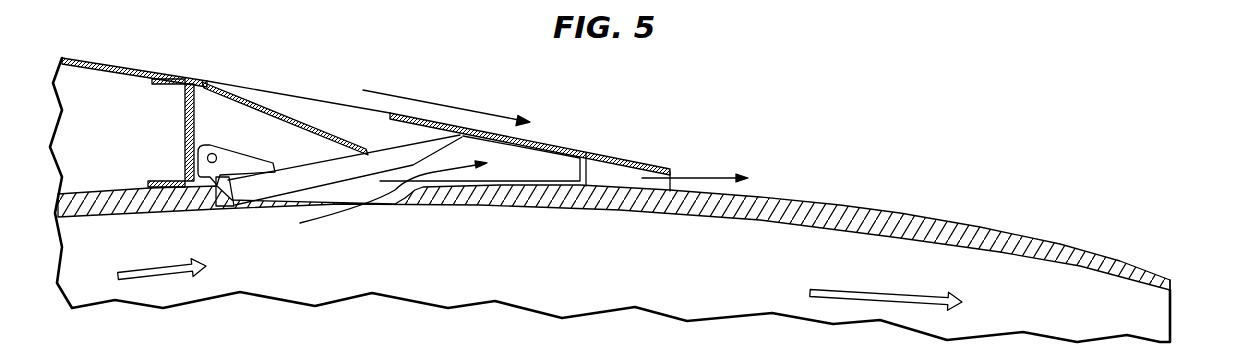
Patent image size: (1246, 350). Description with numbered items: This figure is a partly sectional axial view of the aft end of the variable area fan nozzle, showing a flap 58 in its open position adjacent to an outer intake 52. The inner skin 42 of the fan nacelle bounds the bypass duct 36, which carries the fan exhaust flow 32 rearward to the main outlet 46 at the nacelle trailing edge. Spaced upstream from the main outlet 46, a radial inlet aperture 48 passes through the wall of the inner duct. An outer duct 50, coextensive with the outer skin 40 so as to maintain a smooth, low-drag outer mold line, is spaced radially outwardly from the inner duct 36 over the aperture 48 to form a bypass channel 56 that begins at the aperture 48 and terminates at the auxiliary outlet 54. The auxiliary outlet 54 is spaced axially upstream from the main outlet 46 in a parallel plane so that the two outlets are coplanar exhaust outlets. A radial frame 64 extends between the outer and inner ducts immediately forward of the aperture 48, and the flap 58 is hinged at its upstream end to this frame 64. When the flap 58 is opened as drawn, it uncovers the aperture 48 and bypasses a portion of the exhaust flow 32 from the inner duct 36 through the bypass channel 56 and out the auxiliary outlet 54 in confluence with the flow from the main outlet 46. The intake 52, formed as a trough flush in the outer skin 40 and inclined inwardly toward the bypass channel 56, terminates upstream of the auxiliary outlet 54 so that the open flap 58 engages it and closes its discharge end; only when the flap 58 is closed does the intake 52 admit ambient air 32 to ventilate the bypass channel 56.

The exhaust flow 32 is at (427, 100).
The bypass duct 36 is at (560, 273).
The outer skin 40 is at (115, 62).
The inner skin 42 is at (87, 218).
The main outlet 46 is at (1172, 298).
The inlet apertures 48 is at (388, 205).
The outer duct 50 is at (558, 140).
The outer intakes 52 is at (237, 82).
The auxiliary outlet 54 is at (673, 175).
The bypass channel 56 is at (520, 172).
The flap 58 is at (285, 177).
The radial frame 64 is at (184, 126).